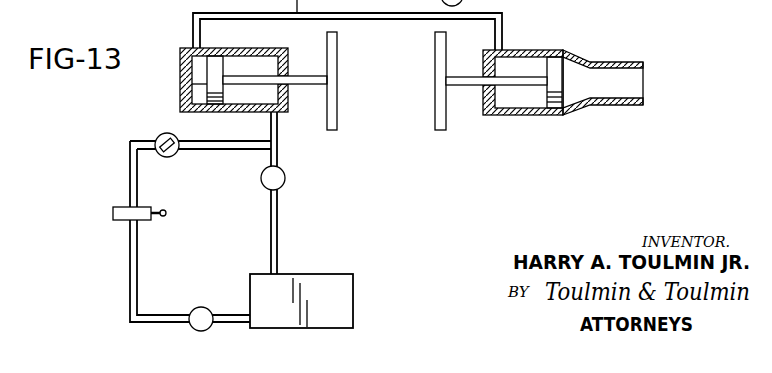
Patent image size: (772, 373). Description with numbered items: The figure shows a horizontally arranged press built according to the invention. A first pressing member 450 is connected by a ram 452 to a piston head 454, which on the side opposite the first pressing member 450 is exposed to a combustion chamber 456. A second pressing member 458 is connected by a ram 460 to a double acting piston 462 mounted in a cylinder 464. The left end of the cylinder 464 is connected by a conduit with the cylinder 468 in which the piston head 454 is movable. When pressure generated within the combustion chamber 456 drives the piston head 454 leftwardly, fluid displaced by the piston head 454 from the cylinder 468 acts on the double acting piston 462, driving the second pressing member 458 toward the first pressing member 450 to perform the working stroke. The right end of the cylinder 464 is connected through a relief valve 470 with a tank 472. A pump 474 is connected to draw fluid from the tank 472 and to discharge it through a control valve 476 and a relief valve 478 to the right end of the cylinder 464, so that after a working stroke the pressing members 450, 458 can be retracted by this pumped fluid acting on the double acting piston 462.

The first pressing member 450 is at (434, 107).
The ram 452 is at (513, 88).
The piston head 454 is at (558, 63).
The combustion chamber 456 is at (580, 94).
The second pressing member 458 is at (338, 88).
The ram 460 is at (305, 84).
The double acting piston 462 is at (212, 89).
The cylinder 464 is at (216, 112).
The cylinder 468 is at (518, 50).
The relief valve 470 is at (285, 180).
The tank 472 is at (338, 285).
The pump 474 is at (210, 308).
The control valve 476 is at (148, 210).
The relief valve 478 is at (178, 154).